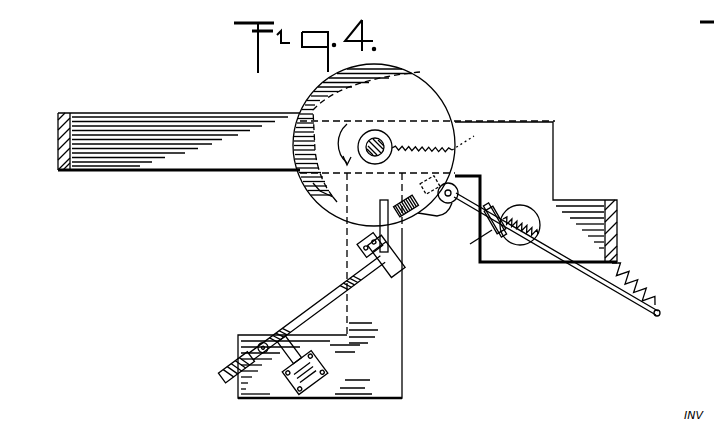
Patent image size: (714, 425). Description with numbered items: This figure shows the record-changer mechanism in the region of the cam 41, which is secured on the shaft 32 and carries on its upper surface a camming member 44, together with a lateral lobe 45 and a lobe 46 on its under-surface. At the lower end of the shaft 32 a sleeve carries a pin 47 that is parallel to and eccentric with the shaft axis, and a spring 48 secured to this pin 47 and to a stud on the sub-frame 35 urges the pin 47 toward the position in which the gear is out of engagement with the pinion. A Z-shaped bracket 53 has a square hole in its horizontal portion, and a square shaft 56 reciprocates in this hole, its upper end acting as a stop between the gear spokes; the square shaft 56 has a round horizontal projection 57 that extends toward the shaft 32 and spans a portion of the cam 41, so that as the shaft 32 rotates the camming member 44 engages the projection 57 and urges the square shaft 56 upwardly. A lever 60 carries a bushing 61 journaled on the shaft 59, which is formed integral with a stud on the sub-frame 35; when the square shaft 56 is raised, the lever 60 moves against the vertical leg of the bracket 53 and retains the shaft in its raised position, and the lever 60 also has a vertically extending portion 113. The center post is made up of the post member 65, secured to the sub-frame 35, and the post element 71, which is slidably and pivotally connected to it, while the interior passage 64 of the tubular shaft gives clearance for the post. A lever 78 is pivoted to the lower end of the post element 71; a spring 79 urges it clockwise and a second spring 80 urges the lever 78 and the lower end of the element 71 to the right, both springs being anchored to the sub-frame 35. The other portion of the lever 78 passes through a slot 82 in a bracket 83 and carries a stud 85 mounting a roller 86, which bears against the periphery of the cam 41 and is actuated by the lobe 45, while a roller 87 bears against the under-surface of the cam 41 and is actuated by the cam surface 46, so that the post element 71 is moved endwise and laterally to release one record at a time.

The shaft 32 is at (386, 142).
The sub-frame 35 is at (390, 314).
The cam 41 is at (443, 103).
The camming member 44 is at (403, 217).
The lateral lobe 45 is at (292, 120).
The lobe 46 is at (313, 186).
The pin 47 is at (372, 132).
The spring 48 is at (423, 146).
The Z-shaped bracket 53 is at (396, 271).
The square shaft 56 is at (368, 252).
The horizontal projection 57 is at (380, 216).
The shaft 59 is at (265, 343).
The lever 60 is at (326, 286).
The bushing 61 is at (285, 362).
The interior passage 64 is at (537, 218).
The post member 65 is at (526, 211).
The post element 71 is at (515, 257).
The lever 78 is at (490, 208).
The spring 79 is at (643, 286).
The second spring 80 is at (610, 284).
The slot 82 is at (471, 245).
The bracket 83 is at (505, 217).
The stud 85 is at (448, 203).
The roller 86 is at (452, 186).
The roller 87 is at (471, 140).
The portion 113 is at (223, 382).